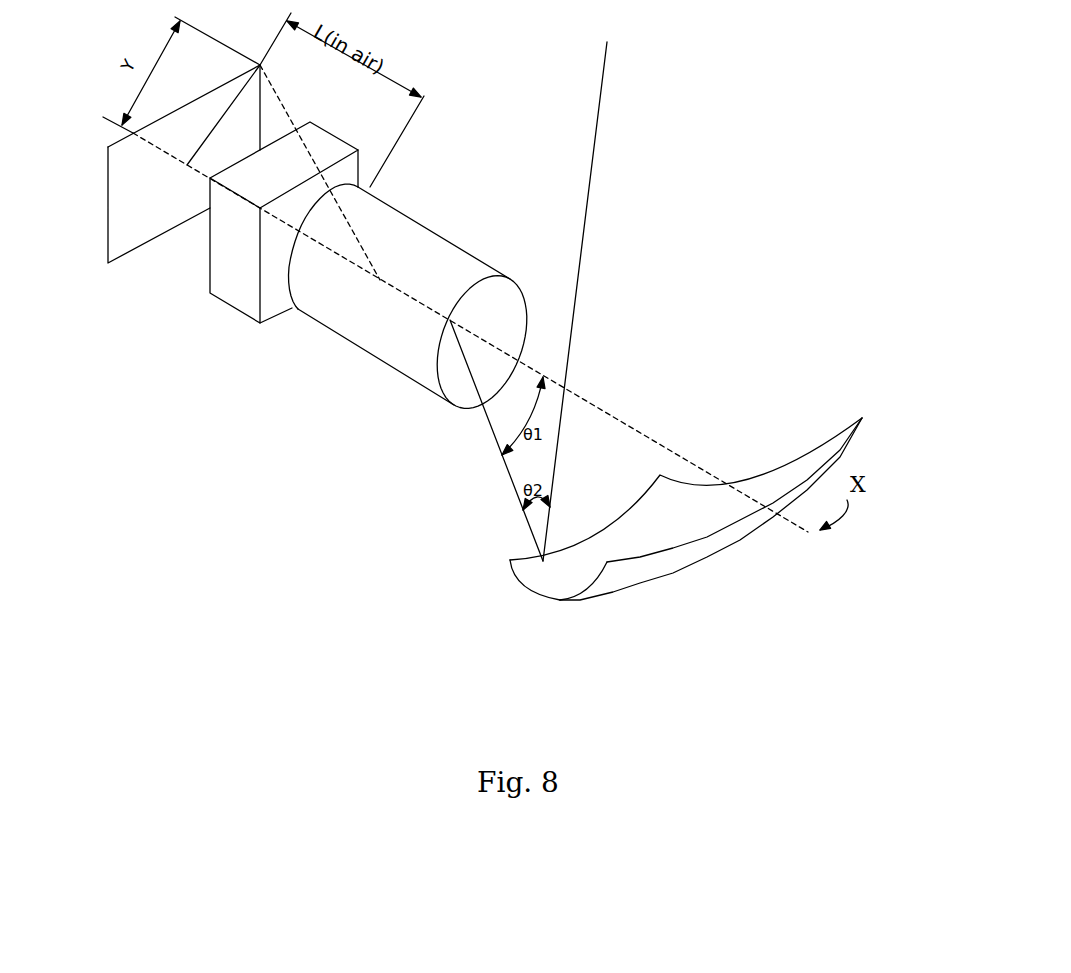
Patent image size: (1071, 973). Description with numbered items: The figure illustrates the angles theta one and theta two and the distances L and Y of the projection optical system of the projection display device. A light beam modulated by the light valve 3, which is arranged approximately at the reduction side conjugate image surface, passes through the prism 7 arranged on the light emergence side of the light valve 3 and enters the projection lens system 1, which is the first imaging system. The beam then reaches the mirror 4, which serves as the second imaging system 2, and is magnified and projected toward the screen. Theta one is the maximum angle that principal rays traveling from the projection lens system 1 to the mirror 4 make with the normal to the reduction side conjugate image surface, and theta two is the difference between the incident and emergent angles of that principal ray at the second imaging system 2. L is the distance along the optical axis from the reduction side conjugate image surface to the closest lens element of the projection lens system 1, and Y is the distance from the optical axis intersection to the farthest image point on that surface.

The projection lens system 1 is at (478, 215).
The second imaging system 2 is at (903, 385).
The light valve 3 is at (87, 265).
The mirror 4 is at (740, 563).
The prism 7 is at (200, 320).